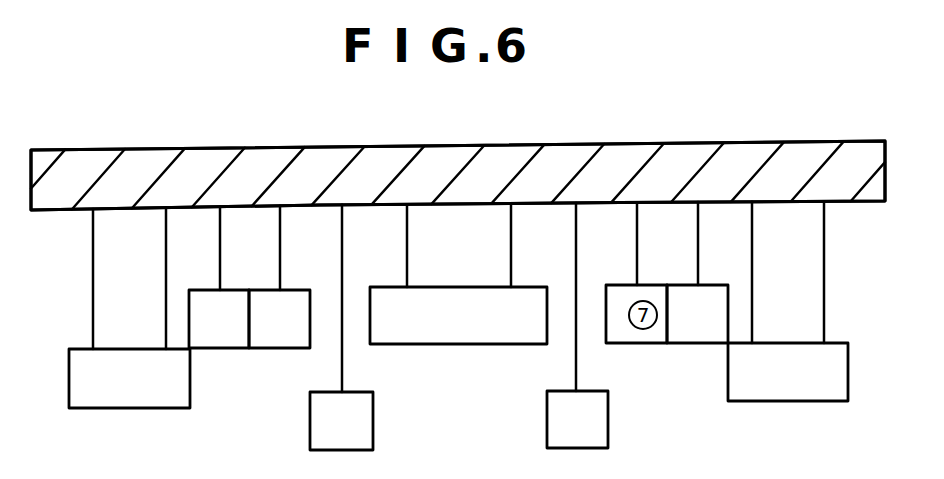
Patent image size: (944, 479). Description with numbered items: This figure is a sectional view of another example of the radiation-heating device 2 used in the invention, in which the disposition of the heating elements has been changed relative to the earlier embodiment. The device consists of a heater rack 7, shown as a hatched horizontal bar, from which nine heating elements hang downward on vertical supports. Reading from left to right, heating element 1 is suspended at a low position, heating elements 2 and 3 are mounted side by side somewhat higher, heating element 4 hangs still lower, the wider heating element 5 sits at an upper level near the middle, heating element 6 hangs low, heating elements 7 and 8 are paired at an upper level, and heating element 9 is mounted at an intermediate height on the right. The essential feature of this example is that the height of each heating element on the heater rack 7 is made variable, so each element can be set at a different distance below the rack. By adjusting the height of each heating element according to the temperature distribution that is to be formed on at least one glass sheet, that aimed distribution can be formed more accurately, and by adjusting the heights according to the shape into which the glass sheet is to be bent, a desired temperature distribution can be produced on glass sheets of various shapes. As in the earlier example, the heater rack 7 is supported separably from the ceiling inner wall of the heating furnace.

The heater rack 7 is at (370, 158).
The radiation-heating device 2 is at (790, 136).
The heating element 1 is at (129, 308).
The heating element 3 is at (279, 277).
The heating element 4 is at (341, 327).
The heating element 5 is at (458, 273).
The heating element 6 is at (577, 325).
The heating element 8 is at (697, 272).
The heating element 9 is at (788, 301).